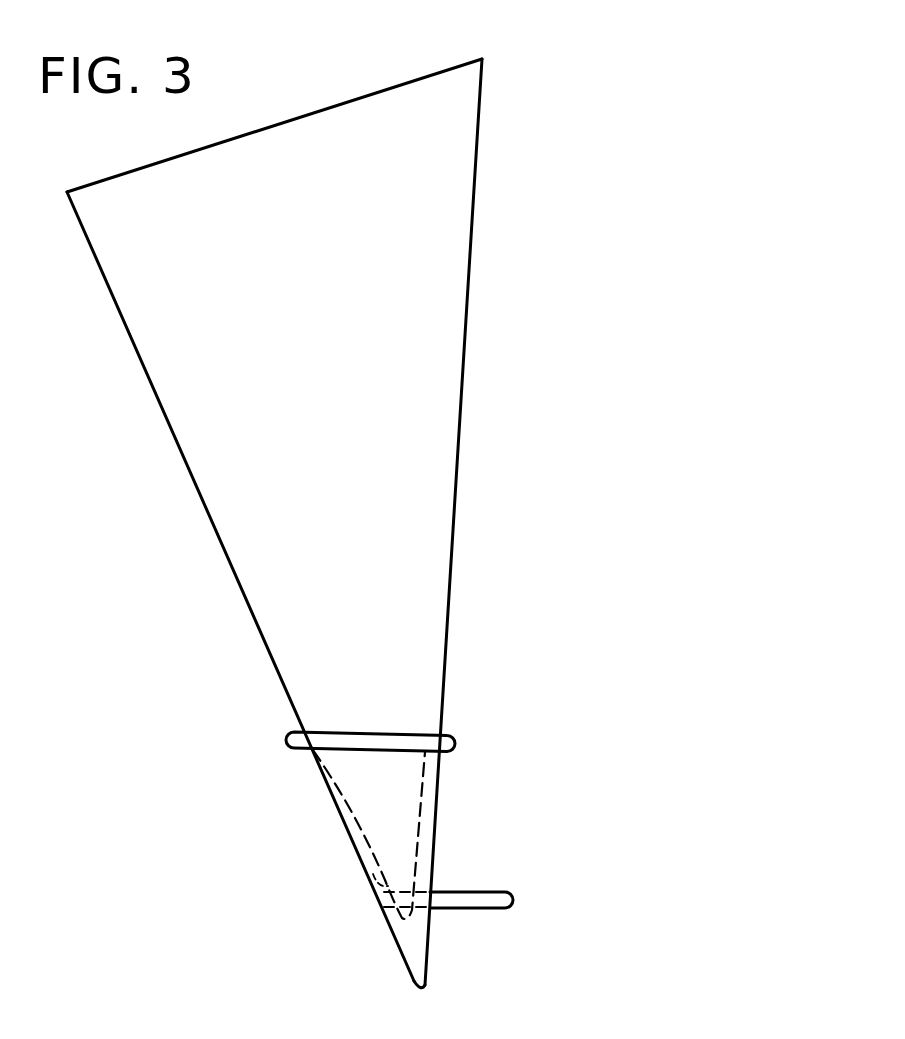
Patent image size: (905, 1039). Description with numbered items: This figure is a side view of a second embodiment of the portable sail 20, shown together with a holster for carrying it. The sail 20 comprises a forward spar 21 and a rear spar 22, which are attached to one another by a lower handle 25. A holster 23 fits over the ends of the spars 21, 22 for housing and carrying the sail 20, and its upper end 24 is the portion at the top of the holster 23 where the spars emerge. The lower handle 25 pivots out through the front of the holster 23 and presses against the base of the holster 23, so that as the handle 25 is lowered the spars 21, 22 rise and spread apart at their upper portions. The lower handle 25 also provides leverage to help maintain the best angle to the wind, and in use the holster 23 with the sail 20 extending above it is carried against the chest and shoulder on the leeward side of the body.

The portable sail 20 is at (314, 523).
The forward spar 21 is at (459, 432).
The rear spar 22 is at (253, 615).
The holster 23 is at (430, 798).
The upper end of the holster 24 is at (453, 735).
The lower handle 25 is at (507, 893).